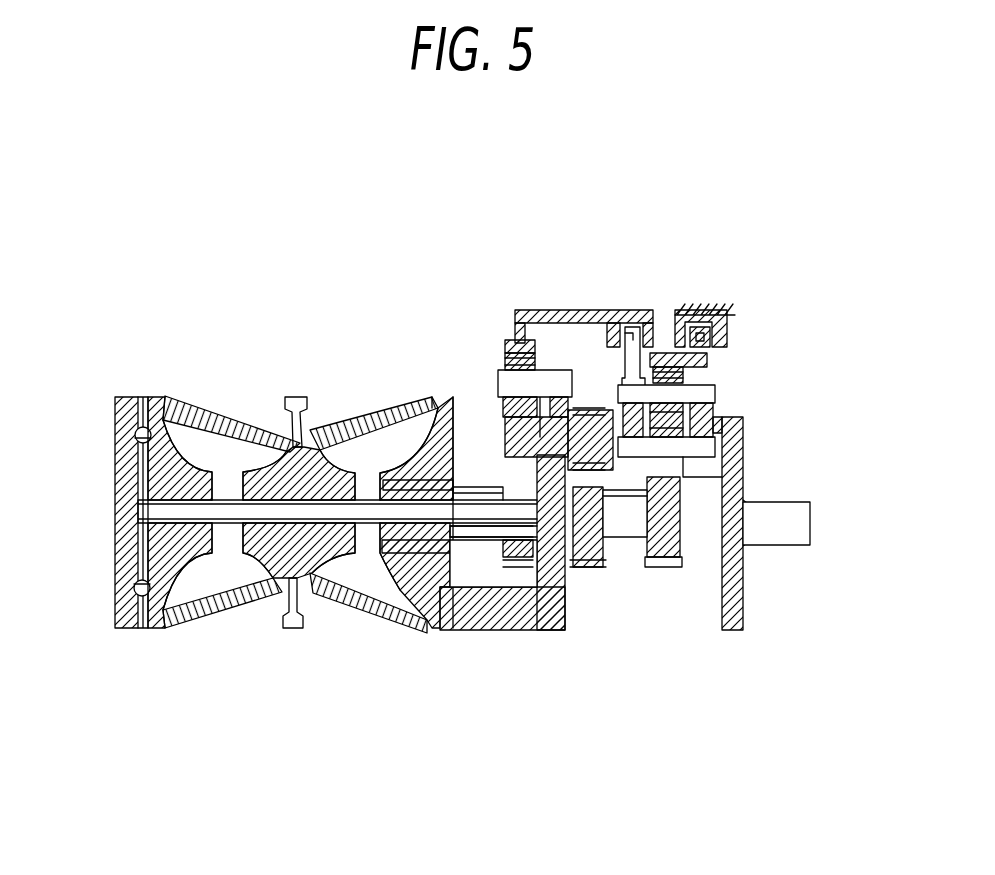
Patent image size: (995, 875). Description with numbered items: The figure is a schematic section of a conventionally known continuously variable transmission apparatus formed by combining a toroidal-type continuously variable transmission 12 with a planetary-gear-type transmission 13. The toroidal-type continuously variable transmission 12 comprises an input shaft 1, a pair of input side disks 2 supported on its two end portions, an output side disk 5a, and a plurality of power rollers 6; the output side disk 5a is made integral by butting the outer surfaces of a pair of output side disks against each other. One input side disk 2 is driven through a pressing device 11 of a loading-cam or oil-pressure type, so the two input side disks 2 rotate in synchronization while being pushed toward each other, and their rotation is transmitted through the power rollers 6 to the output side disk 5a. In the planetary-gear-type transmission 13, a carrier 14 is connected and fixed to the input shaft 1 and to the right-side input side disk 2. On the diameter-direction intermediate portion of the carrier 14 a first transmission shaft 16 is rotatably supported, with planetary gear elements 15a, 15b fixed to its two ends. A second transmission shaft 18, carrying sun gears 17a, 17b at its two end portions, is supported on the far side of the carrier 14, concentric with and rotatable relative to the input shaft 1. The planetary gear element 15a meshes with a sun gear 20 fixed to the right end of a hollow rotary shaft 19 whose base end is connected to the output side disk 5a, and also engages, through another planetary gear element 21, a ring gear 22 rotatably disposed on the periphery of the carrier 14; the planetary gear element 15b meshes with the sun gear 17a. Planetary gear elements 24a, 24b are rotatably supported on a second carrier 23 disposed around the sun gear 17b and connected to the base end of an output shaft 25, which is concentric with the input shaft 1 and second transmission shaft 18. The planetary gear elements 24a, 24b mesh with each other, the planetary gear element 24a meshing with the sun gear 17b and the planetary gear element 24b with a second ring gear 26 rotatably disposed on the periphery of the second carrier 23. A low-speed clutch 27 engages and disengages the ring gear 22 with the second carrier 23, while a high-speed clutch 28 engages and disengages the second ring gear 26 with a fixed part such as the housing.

The input shaft 1 is at (125, 560).
The input side disks 2 is at (160, 397).
The output side disk 5a is at (297, 397).
The power rollers 6 is at (213, 430).
The pressing device 11 is at (140, 428).
The toroidal-type continuously variable transmission 12 is at (298, 459).
The planetary-gear-type transmission 13 is at (713, 544).
The carrier 14 is at (577, 390).
The planetary gear element 15a is at (505, 400).
The planetary gear element 15b is at (610, 315).
The first transmission shaft 16 is at (555, 632).
The sun gear 17a is at (583, 567).
The sun gear 17b is at (660, 567).
The second transmission shaft 18 is at (612, 497).
The hollow rotary shaft 19 is at (467, 633).
The sun gear 20 is at (502, 565).
The planetary gear element 21 is at (490, 342).
The ring gear 22 is at (543, 310).
The second carrier 23 is at (718, 397).
The planetary gear element 24a is at (685, 478).
The planetary gear element 24b is at (722, 347).
The output shaft 25 is at (777, 520).
The second ring gear 26 is at (680, 312).
The low-speed clutch 27 is at (640, 325).
The high-speed clutch 28 is at (730, 310).